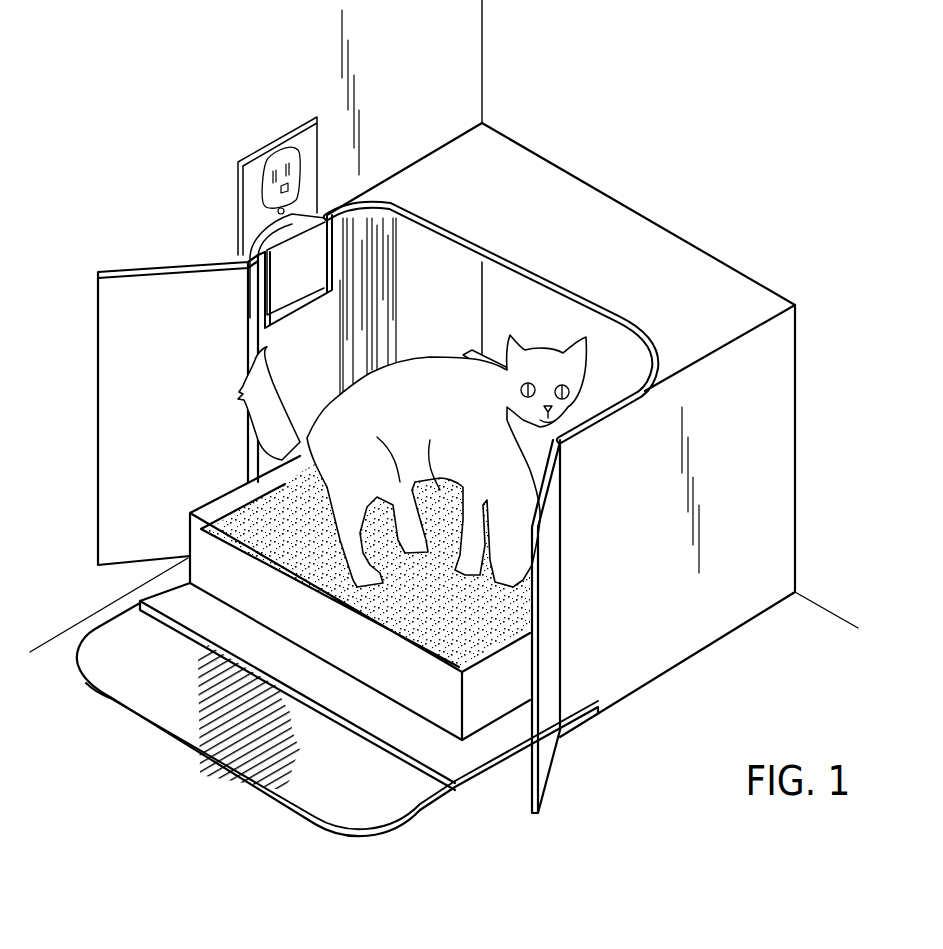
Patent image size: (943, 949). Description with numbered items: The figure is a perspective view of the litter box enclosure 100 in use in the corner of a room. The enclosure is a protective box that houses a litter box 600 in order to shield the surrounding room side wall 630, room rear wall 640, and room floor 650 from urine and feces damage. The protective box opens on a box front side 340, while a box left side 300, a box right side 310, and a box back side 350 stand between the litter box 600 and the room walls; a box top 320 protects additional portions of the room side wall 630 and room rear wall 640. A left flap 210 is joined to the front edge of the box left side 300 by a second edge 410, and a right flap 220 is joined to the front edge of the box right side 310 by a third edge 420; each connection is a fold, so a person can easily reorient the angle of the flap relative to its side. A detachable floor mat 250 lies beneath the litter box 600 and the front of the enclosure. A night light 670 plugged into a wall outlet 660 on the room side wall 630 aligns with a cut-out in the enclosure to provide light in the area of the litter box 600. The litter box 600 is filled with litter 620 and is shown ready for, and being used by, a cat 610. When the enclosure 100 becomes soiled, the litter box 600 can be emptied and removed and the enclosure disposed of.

The litter box enclosure 100 is at (666, 120).
The left flap 210 is at (112, 338).
The right flap 220 is at (546, 747).
The detachable floor mat 250 is at (294, 800).
The box left side 300 is at (413, 268).
The box right side 310 is at (688, 630).
The box top 320 is at (645, 250).
The box front side 340 is at (90, 703).
The box back side 350 is at (622, 368).
The second edge 410 is at (247, 322).
The third edge 420 is at (562, 643).
The litter box 600 is at (257, 603).
The cat 610 is at (492, 400).
The litter 620 is at (472, 660).
The room side wall 630 is at (320, 77).
The room rear wall 640 is at (733, 184).
The room floor 650 is at (817, 640).
The wall outlet 660 is at (293, 142).
The night light 670 is at (285, 247).